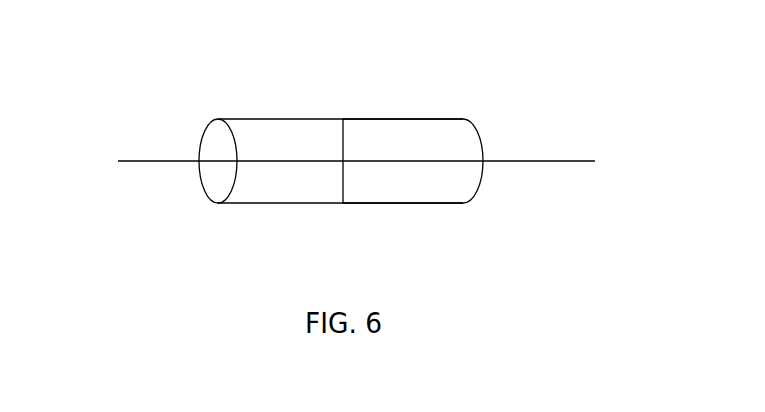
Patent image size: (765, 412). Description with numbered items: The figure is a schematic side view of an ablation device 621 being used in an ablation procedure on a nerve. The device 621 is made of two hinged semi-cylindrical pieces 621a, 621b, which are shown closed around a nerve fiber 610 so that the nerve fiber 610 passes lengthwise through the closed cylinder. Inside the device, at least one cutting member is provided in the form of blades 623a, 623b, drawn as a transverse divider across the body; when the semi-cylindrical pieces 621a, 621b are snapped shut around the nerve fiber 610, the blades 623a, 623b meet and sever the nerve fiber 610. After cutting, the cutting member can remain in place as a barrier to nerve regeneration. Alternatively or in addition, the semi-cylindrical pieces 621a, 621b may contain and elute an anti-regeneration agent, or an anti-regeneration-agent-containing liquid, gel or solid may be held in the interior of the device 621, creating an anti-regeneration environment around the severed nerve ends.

The nerve fiber 610 is at (150, 161).
The device 621 is at (405, 122).
The semi-cylindrical piece 621a is at (455, 119).
The semi-cylindrical piece 621b is at (455, 203).
The blade 623a is at (343, 138).
The blade 623b is at (343, 183).